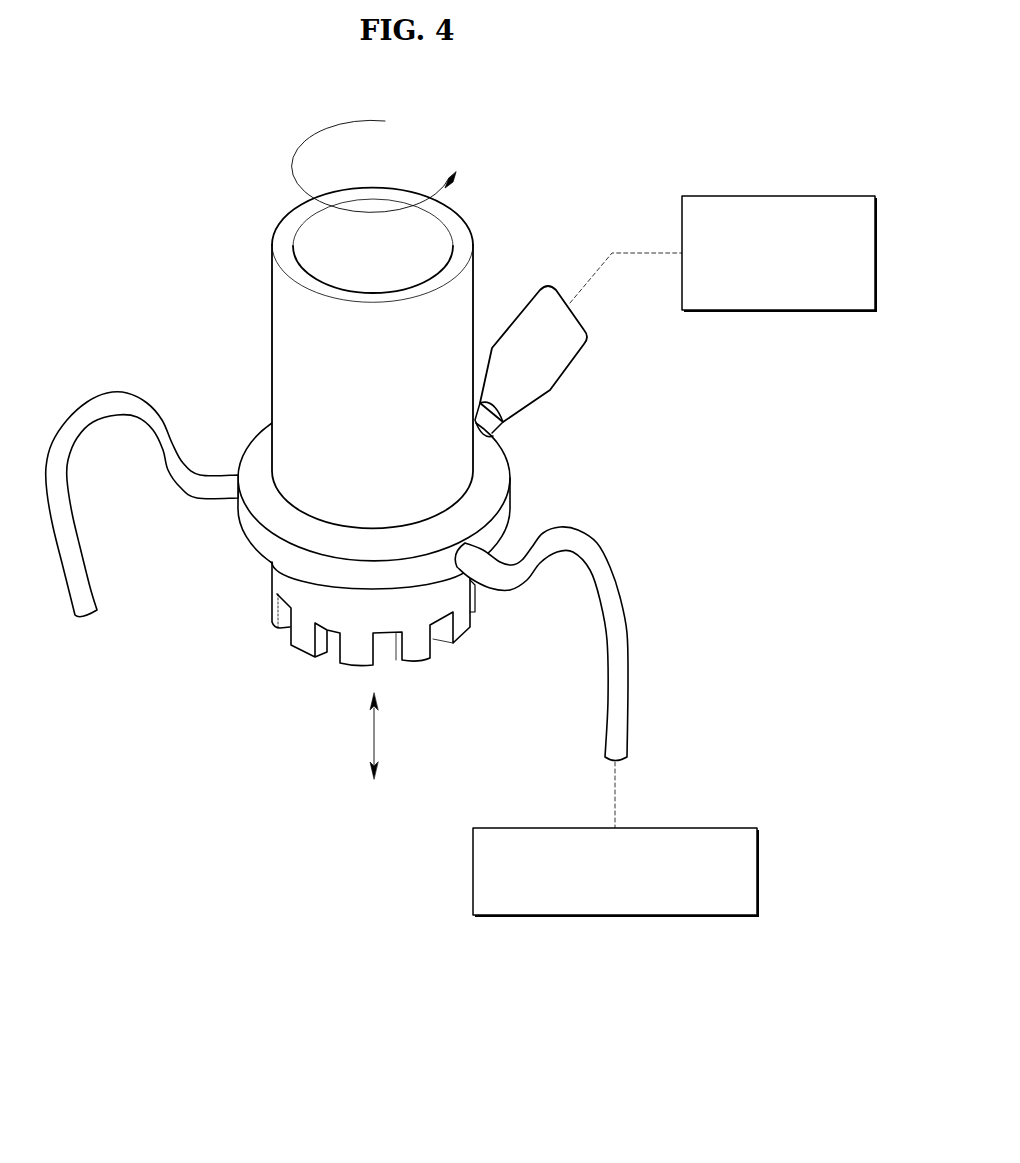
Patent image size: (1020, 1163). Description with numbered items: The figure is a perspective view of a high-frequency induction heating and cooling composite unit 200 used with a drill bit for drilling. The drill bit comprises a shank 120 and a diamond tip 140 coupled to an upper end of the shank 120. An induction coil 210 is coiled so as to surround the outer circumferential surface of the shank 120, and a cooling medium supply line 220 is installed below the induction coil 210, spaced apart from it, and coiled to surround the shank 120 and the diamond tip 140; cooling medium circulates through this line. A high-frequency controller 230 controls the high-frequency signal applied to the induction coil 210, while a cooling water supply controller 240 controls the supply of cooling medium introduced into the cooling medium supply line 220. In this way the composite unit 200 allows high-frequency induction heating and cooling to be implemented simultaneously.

The high-frequency induction heating and cooling composite unit 200 is at (344, 436).
The shank 120 is at (297, 333).
The cooling medium supply line 220 is at (262, 543).
The induction coil 210 is at (402, 543).
The diamond tip 140 is at (308, 645).
The high-frequency controller 230 is at (779, 312).
The cooling water supply controller 240 is at (614, 917).